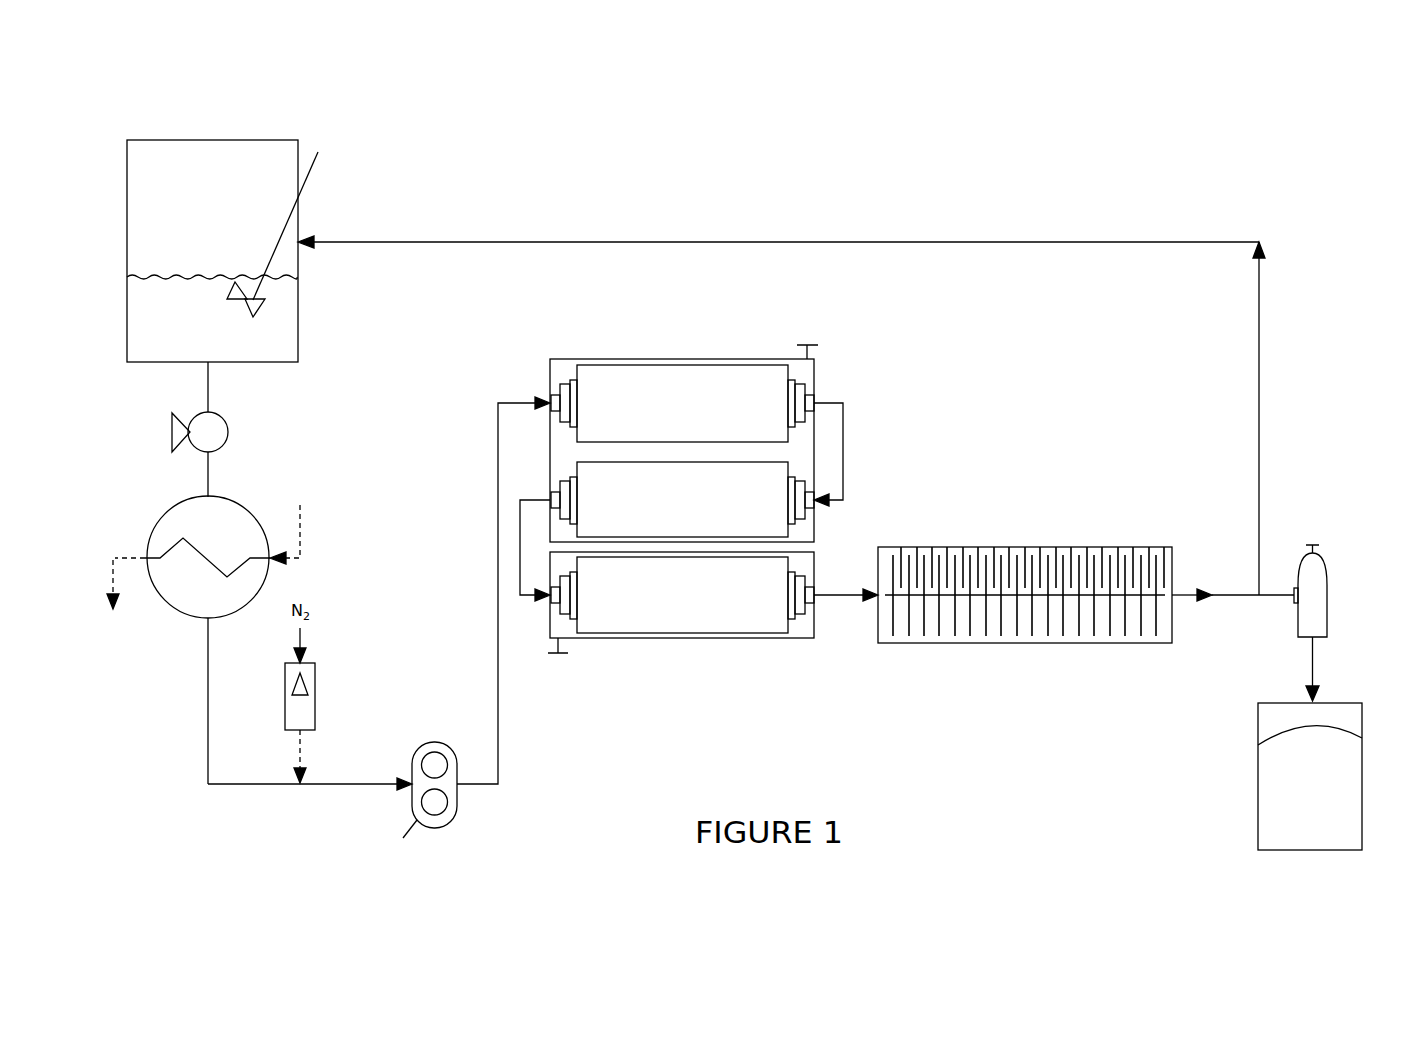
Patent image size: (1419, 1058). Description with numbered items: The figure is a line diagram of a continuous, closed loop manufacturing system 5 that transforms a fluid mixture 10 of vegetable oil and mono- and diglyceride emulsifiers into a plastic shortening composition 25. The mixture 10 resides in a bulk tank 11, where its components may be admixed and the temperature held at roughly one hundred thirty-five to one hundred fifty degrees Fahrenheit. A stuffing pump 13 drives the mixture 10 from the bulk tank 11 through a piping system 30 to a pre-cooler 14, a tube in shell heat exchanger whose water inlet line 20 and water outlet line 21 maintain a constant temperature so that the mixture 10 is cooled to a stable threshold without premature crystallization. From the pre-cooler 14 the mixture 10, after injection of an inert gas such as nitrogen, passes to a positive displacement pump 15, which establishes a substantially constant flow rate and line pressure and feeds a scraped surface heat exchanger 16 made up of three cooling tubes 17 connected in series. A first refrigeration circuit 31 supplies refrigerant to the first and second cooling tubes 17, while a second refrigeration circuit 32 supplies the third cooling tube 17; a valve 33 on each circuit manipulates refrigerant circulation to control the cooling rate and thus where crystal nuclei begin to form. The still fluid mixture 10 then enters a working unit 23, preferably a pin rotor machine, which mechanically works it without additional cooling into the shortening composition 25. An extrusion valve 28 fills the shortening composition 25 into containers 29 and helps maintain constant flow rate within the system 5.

The continuous, closed loop manufacturing system 5 is at (855, 162).
The fluid mixture 10 is at (278, 349).
The bulk tank 11 is at (240, 140).
The stuffing pump 13 is at (228, 428).
The pre-cooler 14 is at (180, 622).
The positive displacement pump 15 is at (457, 806).
The scraped surface heat exchanger 16 is at (713, 495).
The cooling tube 17 is at (753, 503).
The water inlet line 20 is at (300, 528).
The water outlet line 21 is at (122, 555).
The working unit 23 is at (1048, 547).
The shortening composition 25 is at (1285, 725).
The extrusion valve 28 is at (1330, 585).
The containers 29 is at (1261, 786).
The piping system 30 is at (653, 242).
The first refrigeration circuit 31 is at (814, 376).
The second refrigeration circuit 32 is at (814, 625).
The valve 33 is at (815, 345).